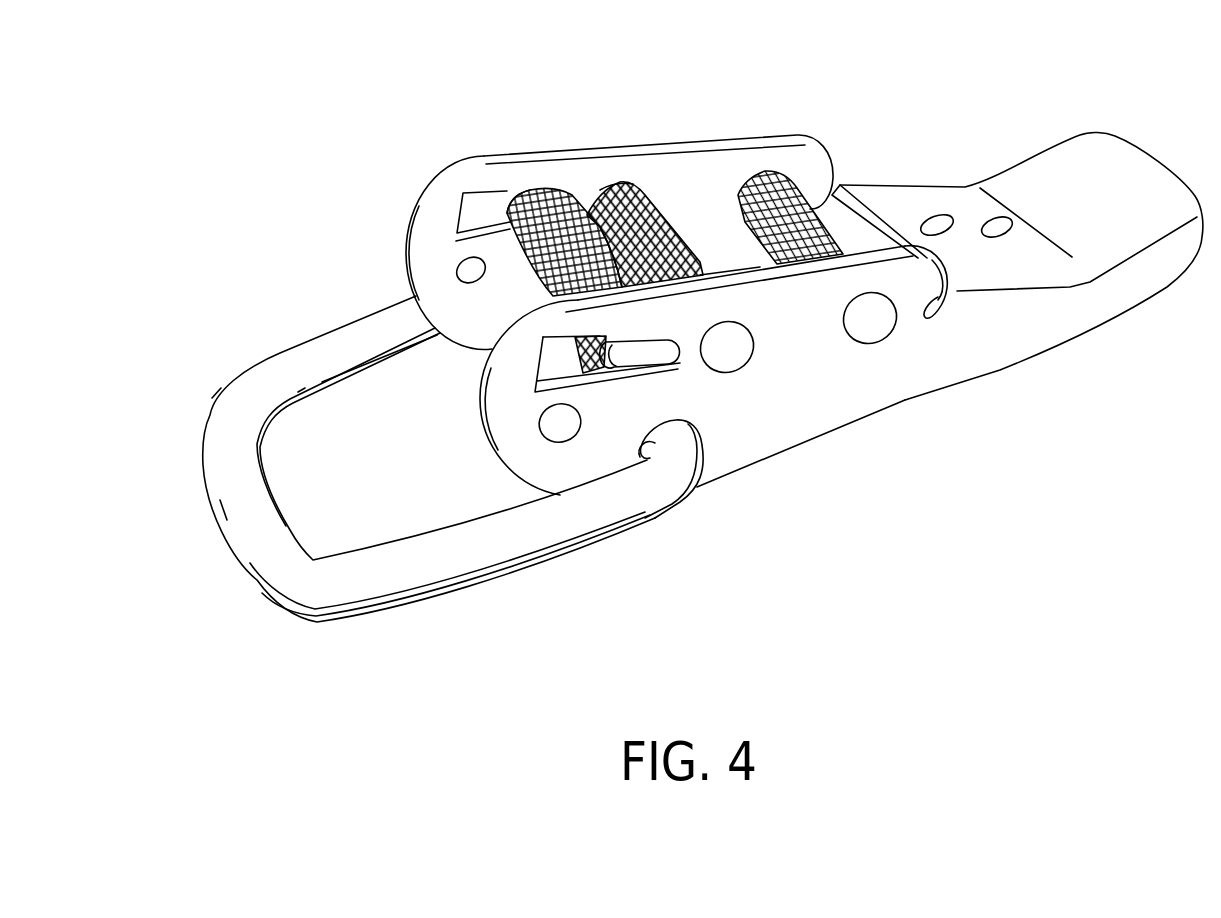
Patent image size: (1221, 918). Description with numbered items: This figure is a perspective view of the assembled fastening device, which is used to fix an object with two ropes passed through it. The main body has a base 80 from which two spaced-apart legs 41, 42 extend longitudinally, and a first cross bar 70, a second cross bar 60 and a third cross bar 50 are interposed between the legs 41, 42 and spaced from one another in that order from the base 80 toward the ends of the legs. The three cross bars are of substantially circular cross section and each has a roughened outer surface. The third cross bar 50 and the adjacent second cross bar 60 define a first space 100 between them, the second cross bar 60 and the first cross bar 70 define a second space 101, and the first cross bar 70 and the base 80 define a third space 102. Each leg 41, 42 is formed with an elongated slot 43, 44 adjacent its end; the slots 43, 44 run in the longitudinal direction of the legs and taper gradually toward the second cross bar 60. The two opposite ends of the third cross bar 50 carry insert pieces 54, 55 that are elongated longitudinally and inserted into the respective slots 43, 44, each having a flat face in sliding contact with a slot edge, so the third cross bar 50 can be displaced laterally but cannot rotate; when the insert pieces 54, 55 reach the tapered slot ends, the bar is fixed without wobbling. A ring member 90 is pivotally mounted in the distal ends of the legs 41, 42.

The leg 41 is at (800, 443).
The leg 42 is at (650, 148).
The elongated slot 43 is at (593, 380).
The elongated slot 44 is at (476, 158).
The third cross bar 50 is at (587, 197).
The insert piece 54 is at (645, 363).
The insert piece 55 is at (518, 198).
The second cross bar 60 is at (673, 210).
The first cross bar 70 is at (797, 178).
The base 80 is at (1130, 150).
The ring member 90 is at (423, 605).
The first space 100 is at (630, 183).
The second space 101 is at (720, 247).
The third space 102 is at (850, 227).